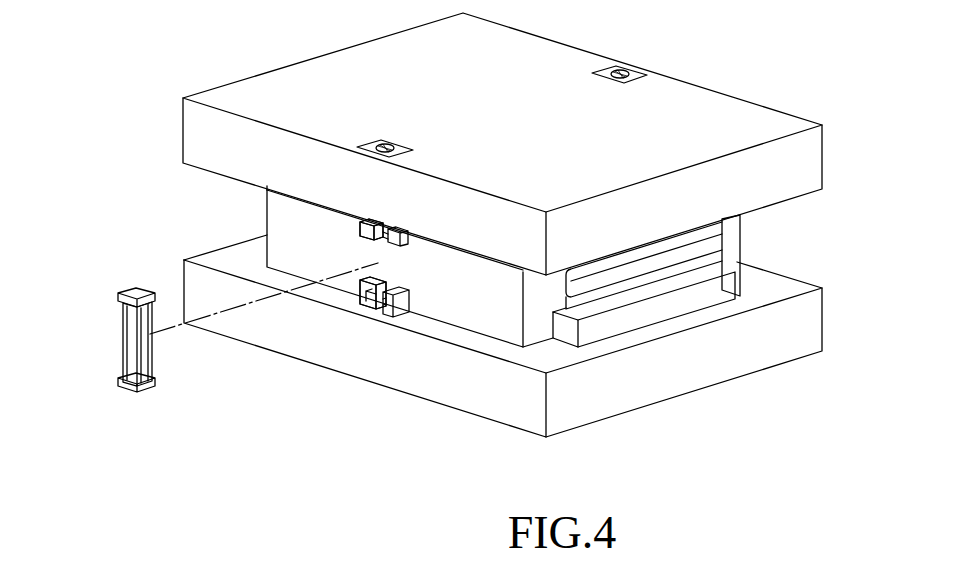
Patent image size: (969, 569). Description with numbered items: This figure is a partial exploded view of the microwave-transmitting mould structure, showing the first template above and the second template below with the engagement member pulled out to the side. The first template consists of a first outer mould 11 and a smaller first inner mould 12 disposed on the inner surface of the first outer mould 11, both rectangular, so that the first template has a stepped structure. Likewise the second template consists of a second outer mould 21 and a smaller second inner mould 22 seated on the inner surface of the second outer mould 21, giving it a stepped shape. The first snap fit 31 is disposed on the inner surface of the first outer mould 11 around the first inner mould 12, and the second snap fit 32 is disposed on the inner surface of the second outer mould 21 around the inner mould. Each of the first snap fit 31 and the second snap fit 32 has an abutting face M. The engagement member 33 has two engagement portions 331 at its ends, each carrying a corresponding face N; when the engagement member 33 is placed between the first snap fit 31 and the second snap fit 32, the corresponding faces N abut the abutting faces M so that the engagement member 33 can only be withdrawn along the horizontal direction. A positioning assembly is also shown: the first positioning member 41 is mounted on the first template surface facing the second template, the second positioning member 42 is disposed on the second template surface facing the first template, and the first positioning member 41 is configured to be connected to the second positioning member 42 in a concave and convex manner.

The first outer mould 11 is at (678, 101).
The first inner mould 12 is at (278, 200).
The second outer mould 21 is at (770, 358).
The second inner mould 22 is at (275, 222).
The first snap fit 31 is at (400, 230).
The second snap fit 32 is at (398, 316).
The engagement member 33 is at (125, 328).
The engagement portion 331 is at (127, 291).
The first positioning member 41 is at (713, 243).
The second positioning member 42 is at (713, 268).
The abutting face M is at (372, 226).
The corresponding face N is at (150, 372).